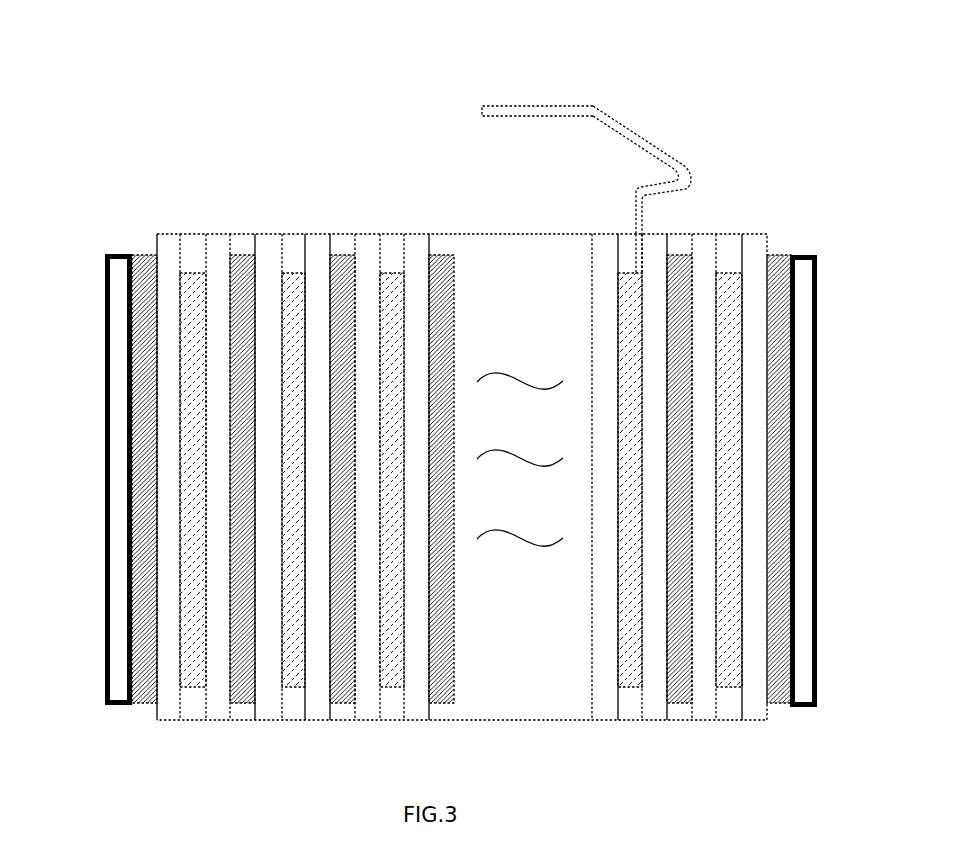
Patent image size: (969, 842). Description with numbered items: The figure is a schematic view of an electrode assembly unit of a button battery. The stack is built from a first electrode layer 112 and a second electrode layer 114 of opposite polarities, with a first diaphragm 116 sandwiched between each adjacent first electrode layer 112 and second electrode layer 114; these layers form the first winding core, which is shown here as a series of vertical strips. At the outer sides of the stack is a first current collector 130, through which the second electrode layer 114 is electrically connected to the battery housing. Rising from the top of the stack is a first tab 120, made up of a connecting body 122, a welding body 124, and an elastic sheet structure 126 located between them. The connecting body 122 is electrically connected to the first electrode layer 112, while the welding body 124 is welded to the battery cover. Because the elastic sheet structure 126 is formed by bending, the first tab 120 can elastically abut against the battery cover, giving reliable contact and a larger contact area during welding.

The first electrode layer 112 is at (197, 288).
The second electrode layer 114 is at (138, 255).
The first diaphragm 116 is at (173, 255).
The first tab 120 is at (606, 146).
The connecting body 122 is at (642, 234).
The welding body 124 is at (558, 106).
The elastic sheet structure 126 is at (653, 142).
The first current collector 130 is at (105, 517).